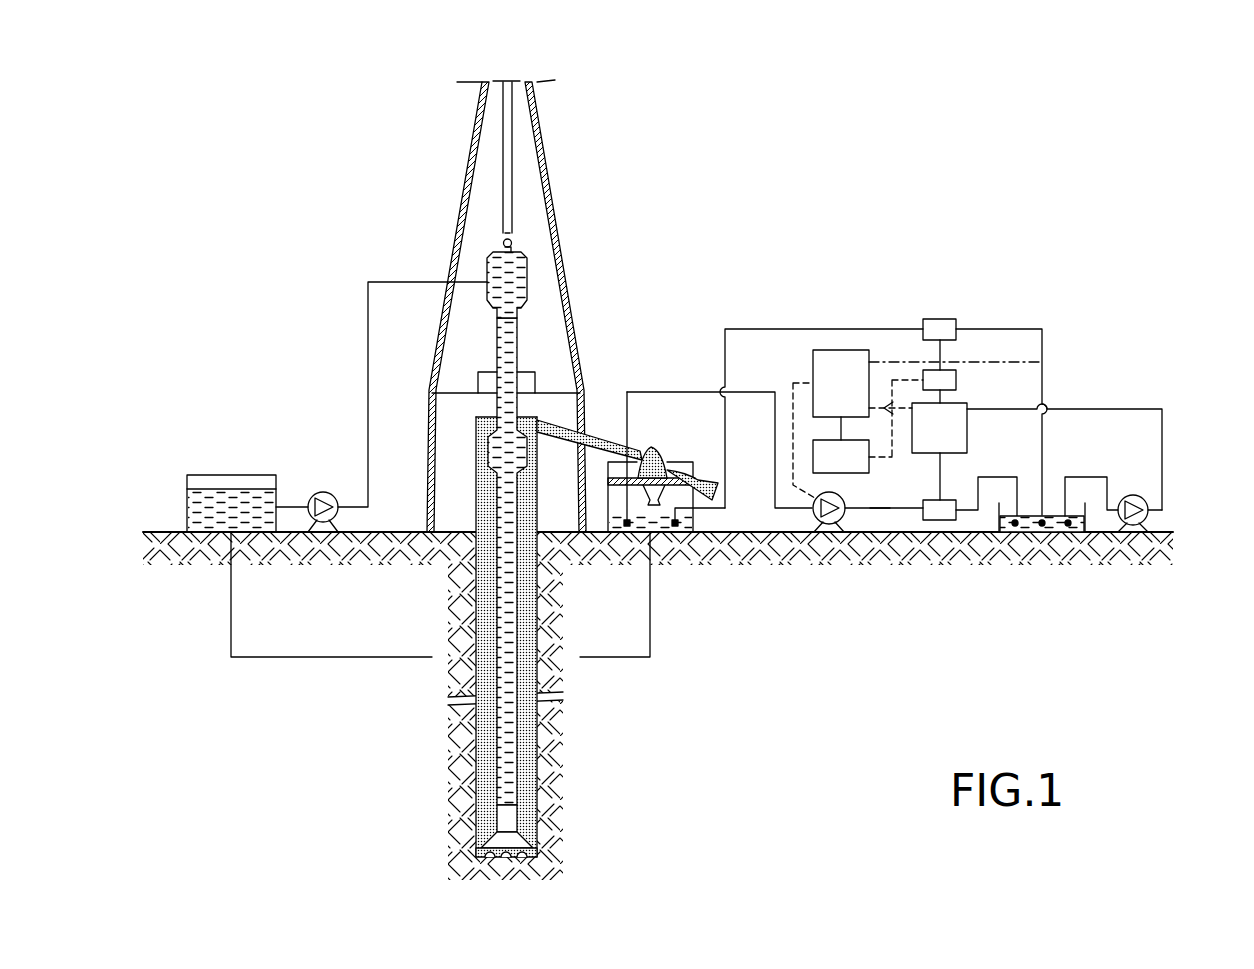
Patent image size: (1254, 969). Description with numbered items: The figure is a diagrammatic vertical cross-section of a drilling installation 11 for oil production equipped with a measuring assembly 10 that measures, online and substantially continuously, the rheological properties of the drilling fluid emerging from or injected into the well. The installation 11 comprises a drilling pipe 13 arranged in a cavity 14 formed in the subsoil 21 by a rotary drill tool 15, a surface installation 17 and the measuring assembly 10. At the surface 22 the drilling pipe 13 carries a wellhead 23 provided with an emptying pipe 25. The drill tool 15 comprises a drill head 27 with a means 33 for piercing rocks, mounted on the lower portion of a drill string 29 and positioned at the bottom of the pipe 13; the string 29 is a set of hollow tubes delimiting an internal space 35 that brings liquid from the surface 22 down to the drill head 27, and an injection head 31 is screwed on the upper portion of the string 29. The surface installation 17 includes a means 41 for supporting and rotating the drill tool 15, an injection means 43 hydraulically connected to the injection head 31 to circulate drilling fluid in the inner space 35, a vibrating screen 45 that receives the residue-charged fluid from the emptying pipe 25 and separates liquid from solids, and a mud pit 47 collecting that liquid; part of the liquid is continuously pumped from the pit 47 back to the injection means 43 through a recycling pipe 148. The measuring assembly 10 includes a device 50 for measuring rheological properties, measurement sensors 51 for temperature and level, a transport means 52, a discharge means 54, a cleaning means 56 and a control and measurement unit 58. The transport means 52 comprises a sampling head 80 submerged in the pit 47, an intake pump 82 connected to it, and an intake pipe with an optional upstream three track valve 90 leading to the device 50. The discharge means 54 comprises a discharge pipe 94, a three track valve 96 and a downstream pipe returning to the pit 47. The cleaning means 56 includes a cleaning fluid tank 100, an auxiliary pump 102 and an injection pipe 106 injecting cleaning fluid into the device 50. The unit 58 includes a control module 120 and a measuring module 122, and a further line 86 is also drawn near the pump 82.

The measuring assembly 10 is at (979, 268).
The drilling installation 11 is at (626, 212).
The drilling pipe 13 is at (476, 776).
The cavity 14 is at (468, 826).
The rotary drill tool 15 is at (477, 629).
The surface installation 17 is at (687, 281).
The subsoil 21 is at (703, 738).
The surface 22 is at (157, 531).
The wellhead 23 is at (552, 414).
The emptying pipe 25 is at (562, 445).
The drill head 27 is at (518, 842).
The drill string 29 is at (528, 634).
The injection head 31 is at (527, 288).
The means for piercing rocks 33 is at (497, 860).
The internal space 35 is at (504, 738).
The means for support and driving in rotation 41 is at (465, 378).
The injection means 43 is at (231, 475).
The vibrating screen 45 is at (663, 449).
The mud pit 47 is at (607, 530).
The device for measuring rheological properties 50 is at (967, 435).
The measurement sensors 51 is at (680, 388).
The transport means 52 is at (877, 522).
The discharge means 54 is at (913, 310).
The means for cleaning 56 is at (1190, 417).
The control and measurement unit 58 is at (821, 343).
The sampling head 80 is at (668, 528).
The drilling fluid intake pump 82 is at (805, 527).
The discharge line 86 is at (862, 528).
The upstream three track valve 90 is at (938, 521).
The discharge pipe 94 is at (945, 352).
The three track valve 96 is at (940, 327).
The cleaning fluid tank 100 is at (1053, 528).
The auxiliary pump 102 is at (1148, 521).
The injection pipe 106 is at (1118, 408).
The control module 120 is at (842, 377).
The measuring module 122 is at (845, 462).
The recycling pipe 148 is at (320, 660).